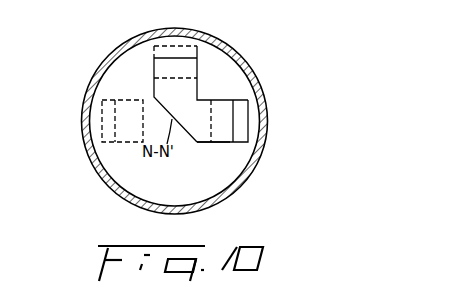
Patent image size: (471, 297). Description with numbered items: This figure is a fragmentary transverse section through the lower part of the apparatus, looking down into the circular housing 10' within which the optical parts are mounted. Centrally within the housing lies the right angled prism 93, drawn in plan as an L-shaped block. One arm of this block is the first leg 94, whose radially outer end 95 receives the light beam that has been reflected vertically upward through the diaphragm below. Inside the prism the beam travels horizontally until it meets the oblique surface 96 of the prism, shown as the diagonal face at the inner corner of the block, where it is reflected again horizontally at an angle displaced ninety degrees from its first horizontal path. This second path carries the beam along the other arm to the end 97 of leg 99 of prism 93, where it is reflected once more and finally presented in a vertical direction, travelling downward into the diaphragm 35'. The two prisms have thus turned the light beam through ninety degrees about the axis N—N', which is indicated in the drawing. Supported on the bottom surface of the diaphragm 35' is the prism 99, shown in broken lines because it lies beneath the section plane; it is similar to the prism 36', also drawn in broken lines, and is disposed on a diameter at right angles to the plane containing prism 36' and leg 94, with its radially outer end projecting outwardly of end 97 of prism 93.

The tubular pipe wall 10' is at (193, 122).
The diaphragm 35' is at (193, 122).
The prism 36' is at (101, 153).
The right angled prism 93 is at (197, 87).
The first leg 94 is at (220, 131).
The radially outer end 95 is at (233, 118).
The oblique surface 96 is at (188, 141).
The end 97 is at (183, 58).
The prism 99 is at (158, 68).